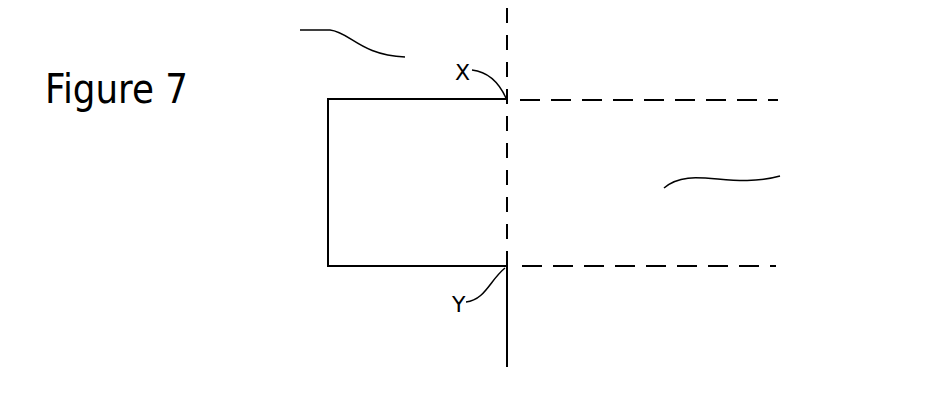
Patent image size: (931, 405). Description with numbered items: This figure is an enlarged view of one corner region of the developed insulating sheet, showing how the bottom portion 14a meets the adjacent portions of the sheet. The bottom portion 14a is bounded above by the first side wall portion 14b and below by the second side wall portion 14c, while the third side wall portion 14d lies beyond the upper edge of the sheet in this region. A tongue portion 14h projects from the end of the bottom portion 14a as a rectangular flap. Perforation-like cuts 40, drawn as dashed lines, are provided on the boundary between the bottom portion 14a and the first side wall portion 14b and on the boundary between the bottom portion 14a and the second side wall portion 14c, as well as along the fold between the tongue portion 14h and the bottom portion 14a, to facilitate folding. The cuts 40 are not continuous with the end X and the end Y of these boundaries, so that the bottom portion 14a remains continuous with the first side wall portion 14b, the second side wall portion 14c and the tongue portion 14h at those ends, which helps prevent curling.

The tongue portion 14h is at (410, 182).
The perforation-like cuts 40 is at (537, 100).
The first side wall portion 14b is at (683, 78).
The second side wall portion 14c is at (672, 306).
The bottom portion 14a is at (740, 173).
The third side wall portion 14d is at (332, 37).